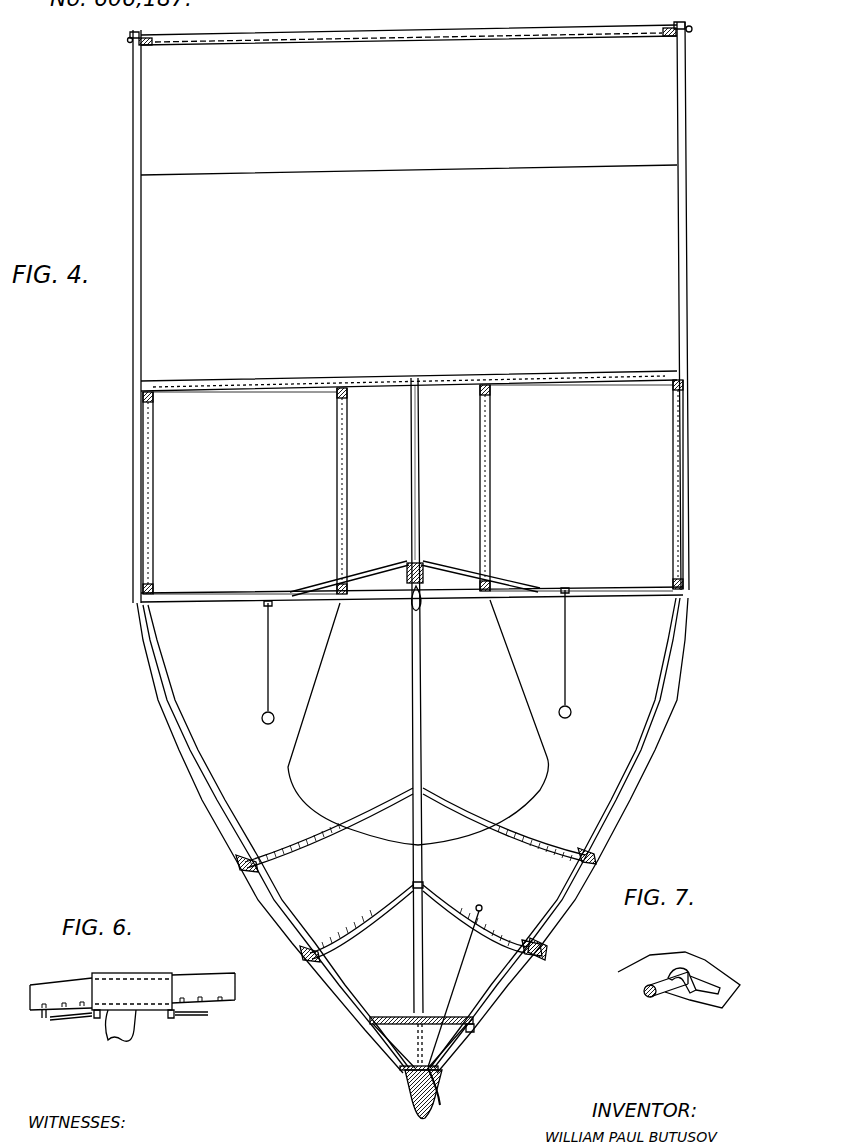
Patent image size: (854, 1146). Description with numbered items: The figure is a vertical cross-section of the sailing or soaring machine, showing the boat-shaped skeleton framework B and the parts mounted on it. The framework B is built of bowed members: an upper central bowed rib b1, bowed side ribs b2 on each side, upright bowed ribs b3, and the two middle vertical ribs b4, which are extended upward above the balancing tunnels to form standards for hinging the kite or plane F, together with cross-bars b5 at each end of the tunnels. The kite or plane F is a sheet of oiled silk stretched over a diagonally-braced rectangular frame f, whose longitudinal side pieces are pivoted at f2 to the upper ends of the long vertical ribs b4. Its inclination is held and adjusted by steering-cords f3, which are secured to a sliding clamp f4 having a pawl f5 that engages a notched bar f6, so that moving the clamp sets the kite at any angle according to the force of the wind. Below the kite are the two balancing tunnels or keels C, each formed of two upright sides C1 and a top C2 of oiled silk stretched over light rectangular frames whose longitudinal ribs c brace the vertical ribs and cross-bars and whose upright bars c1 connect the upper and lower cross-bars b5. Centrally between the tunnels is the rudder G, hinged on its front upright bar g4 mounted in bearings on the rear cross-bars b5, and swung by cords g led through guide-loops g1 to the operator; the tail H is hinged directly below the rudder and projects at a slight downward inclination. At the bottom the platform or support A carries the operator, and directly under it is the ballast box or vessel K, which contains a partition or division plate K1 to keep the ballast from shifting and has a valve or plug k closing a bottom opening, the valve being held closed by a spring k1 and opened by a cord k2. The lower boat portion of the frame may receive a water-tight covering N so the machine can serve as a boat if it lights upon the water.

In FIG. 4, the upright bowed rib b4 is at (141, 325).
In FIG. 4, the upright bowed rib b3 is at (168, 667).
In FIG. 4, the cross-bar b5 is at (215, 383).
In FIG. 4, the bowed side rib b2 is at (333, 843).
In FIG. 4, the upper central bowed rib b1 is at (423, 575).
In FIG. 6, the upper central bowed rib b1 is at (132, 991).
In FIG. 4, the rectangular frame f is at (147, 46).
In FIG. 4, the pivot f2 is at (128, 42).
In FIG. 6, the steering-cord f3 is at (62, 1020).
In FIG. 4, the sliding clamp f4 is at (410, 606).
In FIG. 6, the sliding clamp f4 is at (132, 991).
In FIG. 6, the pawl f5 is at (110, 1030).
In FIG. 6, the notched bar f6 is at (42, 1020).
In FIG. 4, the kite or plane F is at (409, 100).
In FIG. 4, the balancing tunnel or keel C is at (413, 489).
In FIG. 4, the upright side C1 is at (153, 520).
In FIG. 4, the top C2 is at (230, 390).
In FIG. 4, the longitudinal rib c is at (143, 395).
In FIG. 4, the upright bar c1 is at (153, 486).
In FIG. 4, the rudder G is at (419, 488).
In FIG. 4, the cord g is at (325, 584).
In FIG. 4, the guide-loop g1 is at (264, 607).
In FIG. 4, the front upright bar g4 is at (411, 443).
In FIG. 4, the tail H is at (418, 722).
In FIG. 4, the framework B is at (423, 880).
In FIG. 4, the water-tight covering N is at (548, 943).
In FIG. 4, the platform or support A is at (396, 1015).
In FIG. 4, the ballast box or vessel K is at (397, 1043).
In FIG. 4, the partition or division plate K1 is at (425, 1047).
In FIG. 4, the valve or plug k is at (420, 1090).
In FIG. 4, the spring k1 is at (403, 1070).
In FIG. 4, the cord k2 is at (462, 975).